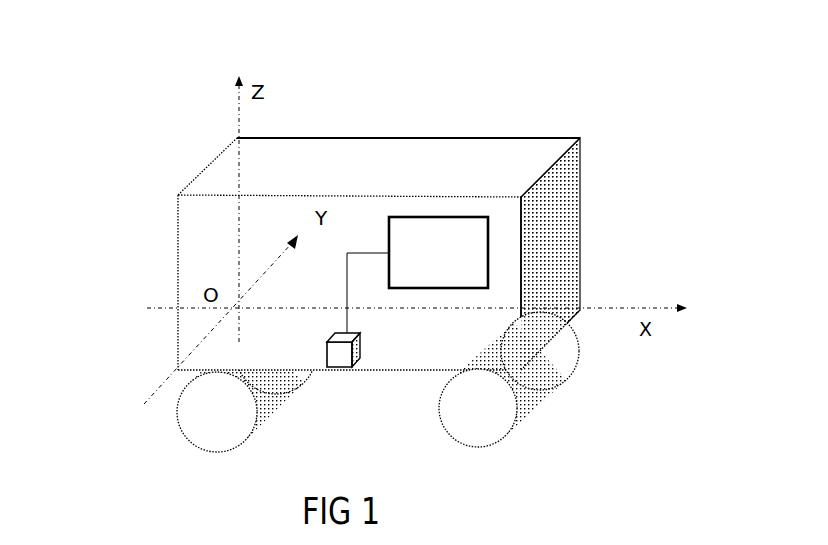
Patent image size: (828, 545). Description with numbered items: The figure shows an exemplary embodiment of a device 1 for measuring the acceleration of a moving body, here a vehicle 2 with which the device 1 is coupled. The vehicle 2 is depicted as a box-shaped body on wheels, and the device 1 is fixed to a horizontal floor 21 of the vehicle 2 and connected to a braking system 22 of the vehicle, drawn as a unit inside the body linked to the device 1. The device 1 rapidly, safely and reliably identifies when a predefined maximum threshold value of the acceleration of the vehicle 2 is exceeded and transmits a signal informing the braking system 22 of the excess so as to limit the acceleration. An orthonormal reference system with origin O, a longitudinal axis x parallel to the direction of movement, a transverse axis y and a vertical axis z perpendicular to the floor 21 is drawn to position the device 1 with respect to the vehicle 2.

The device 1 is at (336, 360).
The vehicle 2 is at (146, 256).
The horizontal floor 21 is at (502, 336).
The braking system 22 is at (417, 275).